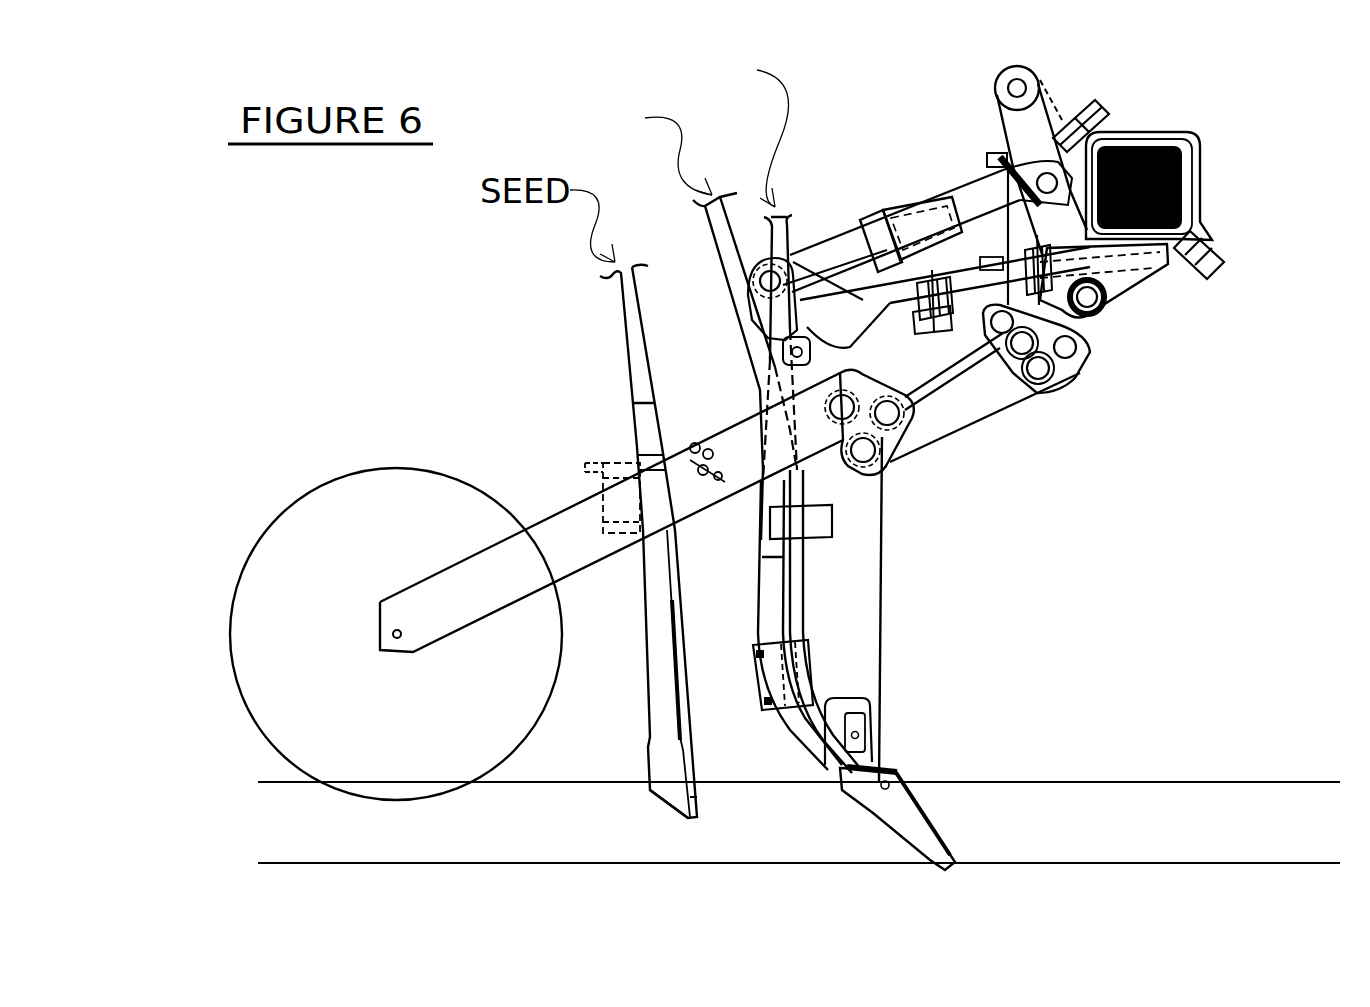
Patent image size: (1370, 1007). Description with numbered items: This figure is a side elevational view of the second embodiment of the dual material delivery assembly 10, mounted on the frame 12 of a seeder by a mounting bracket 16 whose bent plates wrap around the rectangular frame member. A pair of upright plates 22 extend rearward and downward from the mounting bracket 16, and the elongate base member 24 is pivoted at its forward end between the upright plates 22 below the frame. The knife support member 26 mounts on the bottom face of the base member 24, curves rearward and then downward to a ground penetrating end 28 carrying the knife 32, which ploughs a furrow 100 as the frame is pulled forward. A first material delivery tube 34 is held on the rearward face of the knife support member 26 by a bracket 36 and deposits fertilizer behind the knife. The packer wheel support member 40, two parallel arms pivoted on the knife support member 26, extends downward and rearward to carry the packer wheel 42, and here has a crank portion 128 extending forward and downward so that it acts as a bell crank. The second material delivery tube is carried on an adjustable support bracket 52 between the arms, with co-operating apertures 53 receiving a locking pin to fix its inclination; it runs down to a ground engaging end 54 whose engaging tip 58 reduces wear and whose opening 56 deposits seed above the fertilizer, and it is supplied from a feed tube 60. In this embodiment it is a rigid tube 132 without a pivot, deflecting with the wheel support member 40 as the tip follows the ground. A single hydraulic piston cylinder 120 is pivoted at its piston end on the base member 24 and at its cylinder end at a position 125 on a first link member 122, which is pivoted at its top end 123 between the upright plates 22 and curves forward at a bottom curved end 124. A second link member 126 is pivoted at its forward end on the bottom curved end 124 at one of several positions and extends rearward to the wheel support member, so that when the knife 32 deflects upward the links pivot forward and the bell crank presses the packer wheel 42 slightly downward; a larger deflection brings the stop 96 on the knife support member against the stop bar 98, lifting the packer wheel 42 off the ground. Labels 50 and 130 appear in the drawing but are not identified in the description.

The dual material delivery assembly 10 is at (447, 283).
The frame 12 is at (1183, 190).
The mounting bracket 16 is at (1190, 262).
The upright plates 22 is at (1056, 108).
The base member 24 is at (1158, 290).
The knife support member 26 is at (853, 603).
The ground penetrating end 28 is at (860, 753).
The knife 32 is at (955, 845).
The first material delivery tube 34 is at (790, 570).
The bracket 36 is at (790, 680).
The packer wheel support member 40 is at (440, 598).
The packer wheel 42 is at (255, 650).
The seed tube bracket 50 is at (630, 455).
The adjustable support bracket 52 is at (752, 430).
The co-operating apertures 53 is at (700, 440).
The ground engaging end 54 is at (658, 760).
The opening 56 is at (672, 808).
The engaging tip 58 is at (700, 808).
The feed tube 60 is at (626, 332).
The lug 96 is at (823, 515).
The stop 98 is at (740, 490).
The furrow 100 is at (1210, 865).
The hydraulic piston cylinder 120 is at (957, 200).
The first link member 122 is at (995, 120).
The top end 123 is at (1000, 78).
The bottom curved end 124 is at (1075, 355).
The position 125 is at (1100, 112).
The second link member 126 is at (975, 392).
The crank portion 128 is at (893, 450).
The toolbar clamp 130 is at (1170, 130).
The rigid tube 132 is at (662, 657).